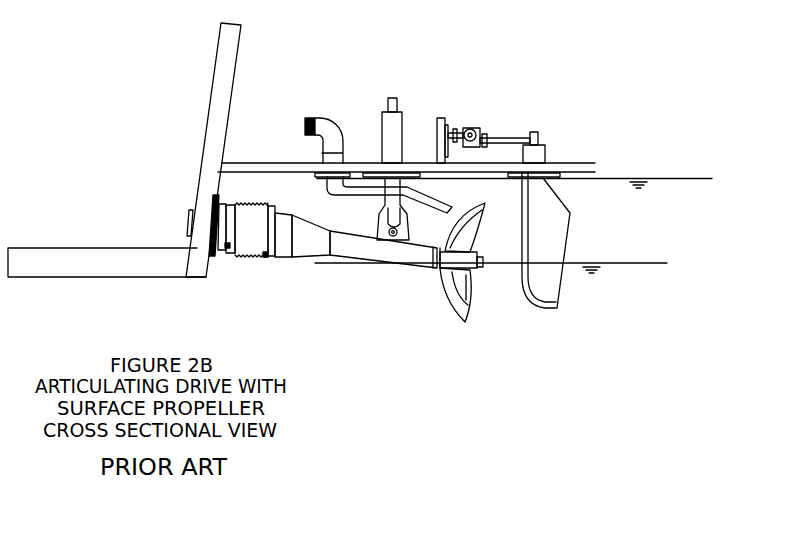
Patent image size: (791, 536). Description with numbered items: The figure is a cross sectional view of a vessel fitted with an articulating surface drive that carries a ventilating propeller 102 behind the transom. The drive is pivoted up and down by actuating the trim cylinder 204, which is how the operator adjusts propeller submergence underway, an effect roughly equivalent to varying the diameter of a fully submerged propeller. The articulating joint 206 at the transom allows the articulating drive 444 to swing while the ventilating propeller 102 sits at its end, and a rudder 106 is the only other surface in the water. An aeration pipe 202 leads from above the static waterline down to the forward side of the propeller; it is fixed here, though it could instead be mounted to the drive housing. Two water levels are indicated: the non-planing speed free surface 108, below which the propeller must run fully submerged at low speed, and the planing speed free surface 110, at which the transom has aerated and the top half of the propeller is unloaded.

The aeration pipe 202 is at (331, 117).
The trim cylinder 204 is at (402, 121).
The articulating joint 206 is at (247, 245).
The articulating drive 444 is at (370, 247).
The ventilating propeller 102 is at (457, 302).
The rudder 106 is at (560, 240).
The non-planing speed free surface 108 is at (680, 182).
The planing speed free surface 110 is at (633, 265).